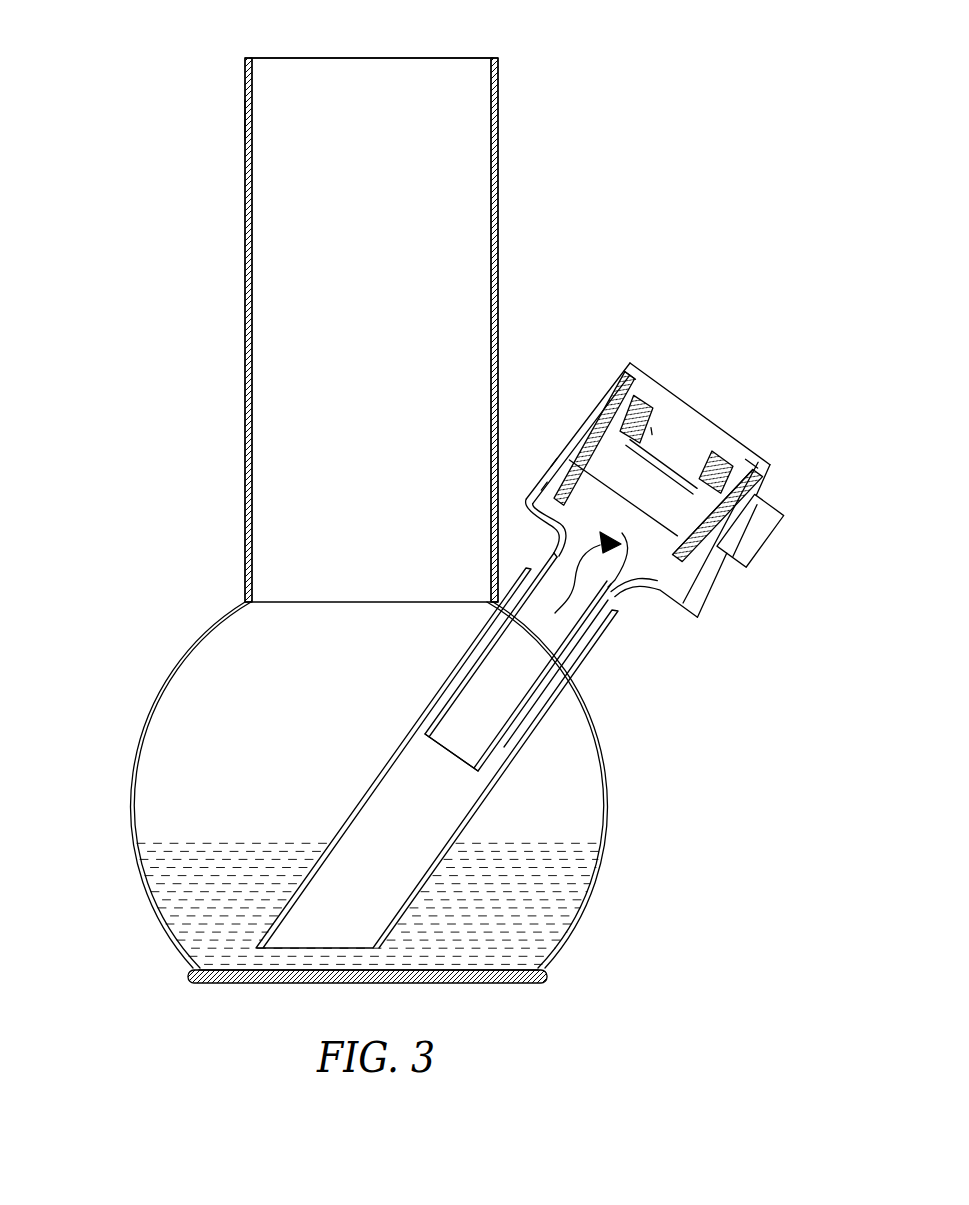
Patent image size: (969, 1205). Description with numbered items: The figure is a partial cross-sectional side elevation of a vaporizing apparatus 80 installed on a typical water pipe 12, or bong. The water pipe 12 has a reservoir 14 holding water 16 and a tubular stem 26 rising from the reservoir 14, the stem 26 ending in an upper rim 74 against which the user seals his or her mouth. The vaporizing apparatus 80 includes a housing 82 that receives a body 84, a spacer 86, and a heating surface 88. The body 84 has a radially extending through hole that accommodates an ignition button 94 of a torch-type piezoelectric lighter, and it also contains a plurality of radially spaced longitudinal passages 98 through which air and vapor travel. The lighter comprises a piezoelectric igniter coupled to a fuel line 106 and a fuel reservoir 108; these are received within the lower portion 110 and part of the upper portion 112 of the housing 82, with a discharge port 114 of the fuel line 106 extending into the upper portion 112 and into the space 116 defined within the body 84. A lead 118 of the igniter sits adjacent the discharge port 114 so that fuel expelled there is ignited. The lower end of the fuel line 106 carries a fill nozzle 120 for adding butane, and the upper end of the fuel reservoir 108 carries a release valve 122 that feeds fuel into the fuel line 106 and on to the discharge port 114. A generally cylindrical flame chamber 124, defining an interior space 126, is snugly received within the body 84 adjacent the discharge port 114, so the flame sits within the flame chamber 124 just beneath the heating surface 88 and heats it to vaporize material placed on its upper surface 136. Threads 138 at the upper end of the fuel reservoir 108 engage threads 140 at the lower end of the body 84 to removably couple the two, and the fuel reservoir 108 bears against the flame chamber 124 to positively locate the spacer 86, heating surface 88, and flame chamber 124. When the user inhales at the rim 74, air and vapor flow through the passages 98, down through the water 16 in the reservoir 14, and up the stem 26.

The water pipe 12 is at (499, 100).
The reservoir 14 is at (136, 738).
The water 16 is at (537, 908).
The tubular stem 26 is at (245, 122).
The upper rim 74 is at (380, 57).
The vaporizing apparatus 80 is at (645, 362).
The housing 82 is at (545, 485).
The body 84 is at (605, 435).
The spacer 86 is at (658, 428).
The heating surface 88 is at (662, 465).
The ignition button 94 is at (762, 530).
The longitudinal passages 98 is at (742, 476).
The fuel line 106 is at (590, 625).
The fuel reservoir 108 is at (490, 688).
The lower portion 110 is at (540, 725).
The upper portion 112 is at (692, 572).
The discharge port 114 is at (598, 598).
The space 116 is at (553, 465).
The lead 118 is at (710, 552).
The fill nozzle 120 is at (433, 740).
The release valve 122 is at (565, 648).
The flame chamber 124 is at (660, 480).
The interior space 126 is at (620, 400).
The upper surface 136 is at (688, 440).
The threads 138 is at (694, 607).
The threads 140 is at (530, 505).